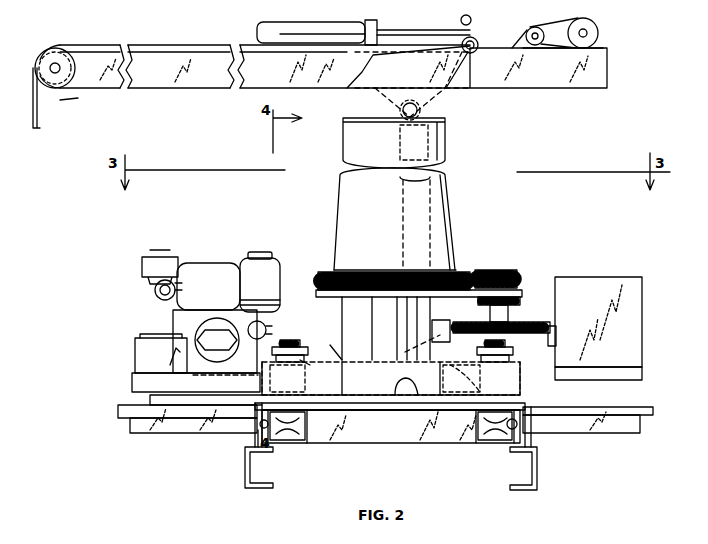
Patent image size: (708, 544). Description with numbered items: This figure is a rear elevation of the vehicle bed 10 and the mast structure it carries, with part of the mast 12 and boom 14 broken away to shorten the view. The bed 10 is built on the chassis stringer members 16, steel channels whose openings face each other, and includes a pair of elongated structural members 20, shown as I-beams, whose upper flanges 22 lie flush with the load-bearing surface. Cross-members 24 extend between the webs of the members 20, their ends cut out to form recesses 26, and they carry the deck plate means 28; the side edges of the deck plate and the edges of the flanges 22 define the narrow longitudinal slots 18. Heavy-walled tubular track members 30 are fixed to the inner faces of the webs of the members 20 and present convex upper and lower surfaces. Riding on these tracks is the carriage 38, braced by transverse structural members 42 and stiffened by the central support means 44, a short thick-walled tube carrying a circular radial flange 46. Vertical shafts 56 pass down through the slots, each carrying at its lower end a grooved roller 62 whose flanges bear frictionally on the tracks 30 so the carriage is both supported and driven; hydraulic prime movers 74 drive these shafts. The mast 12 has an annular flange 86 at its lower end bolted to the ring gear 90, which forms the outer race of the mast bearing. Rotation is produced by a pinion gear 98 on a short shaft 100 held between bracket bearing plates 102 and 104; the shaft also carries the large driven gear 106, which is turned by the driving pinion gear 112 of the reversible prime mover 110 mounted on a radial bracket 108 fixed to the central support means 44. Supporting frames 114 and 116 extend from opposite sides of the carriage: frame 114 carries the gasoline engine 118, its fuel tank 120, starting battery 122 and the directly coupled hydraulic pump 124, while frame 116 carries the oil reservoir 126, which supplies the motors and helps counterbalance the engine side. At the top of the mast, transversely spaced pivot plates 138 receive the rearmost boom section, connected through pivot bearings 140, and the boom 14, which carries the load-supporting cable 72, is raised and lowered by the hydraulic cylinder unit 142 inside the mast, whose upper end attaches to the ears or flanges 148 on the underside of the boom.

The vehicle bed 10 is at (118, 414).
The mast 12 is at (452, 216).
The boom 14 is at (175, 88).
The chassis stringer members 16 is at (245, 480).
The slots 18 is at (320, 410).
The elongated structural members 20 is at (262, 437).
The upper flanges 22 is at (258, 404).
The cross-members 24 is at (388, 430).
The recesses 26 is at (312, 428).
The deck plate means 28 is at (355, 420).
The tubular track members 30 is at (255, 430).
The carriage 38 is at (325, 343).
The transverse structural members 42 is at (262, 384).
The central support means 44 is at (343, 322).
The circular radial flange 46 is at (382, 298).
The shaft 56 is at (296, 342).
The grooved roller 62 is at (298, 432).
The load-supporting cable 72 is at (37, 117).
The prime mover 74 is at (308, 363).
The annular flange 86 is at (455, 269).
The ring gear 90 is at (372, 290).
The pinion gear 98 is at (511, 286).
The short shaft 100 is at (508, 311).
The bracket bearing plate 102 is at (521, 300).
The bracket bearing plate 104 is at (552, 333).
The driven gear 106 is at (548, 324).
The radial bracket 108 is at (440, 328).
The prime mover 110 is at (445, 363).
The driving pinion gear 112 is at (412, 349).
The supporting frame 114 is at (133, 390).
The supporting frame 116 is at (640, 378).
The gasoline engine 118 is at (176, 318).
The fuel tank 120 is at (250, 262).
The starting battery 122 is at (137, 348).
The hydraulic pump 124 is at (216, 334).
The oil reservoir 126 is at (628, 340).
The pivot plates 138 is at (442, 62).
The pivot bearings 140 is at (470, 37).
The hydraulic cylinder unit 142 is at (447, 200).
The ears or flanges 148 is at (463, 72).